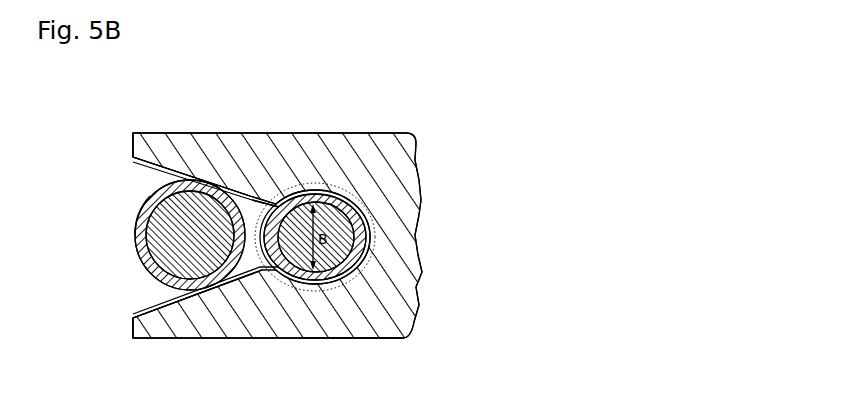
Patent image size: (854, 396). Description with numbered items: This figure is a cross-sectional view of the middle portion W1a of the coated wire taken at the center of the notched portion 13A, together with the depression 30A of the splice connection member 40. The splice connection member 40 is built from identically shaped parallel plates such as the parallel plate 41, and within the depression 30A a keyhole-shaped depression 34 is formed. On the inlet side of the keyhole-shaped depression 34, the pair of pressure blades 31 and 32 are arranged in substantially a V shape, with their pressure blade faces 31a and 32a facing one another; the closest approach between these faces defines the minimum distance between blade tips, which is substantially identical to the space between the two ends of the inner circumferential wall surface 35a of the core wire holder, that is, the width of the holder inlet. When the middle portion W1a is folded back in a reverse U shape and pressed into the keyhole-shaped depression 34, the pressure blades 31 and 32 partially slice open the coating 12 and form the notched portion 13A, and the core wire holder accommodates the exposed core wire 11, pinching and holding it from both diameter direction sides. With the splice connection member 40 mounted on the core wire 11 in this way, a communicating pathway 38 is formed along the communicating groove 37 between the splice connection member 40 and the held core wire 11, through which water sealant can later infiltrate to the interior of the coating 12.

The splice connection member 40 is at (428, 152).
The parallel plate 41 is at (380, 133).
The depression 30A is at (153, 123).
The pressure blade 32 is at (207, 145).
The pressure blade 31 is at (200, 327).
The pressure blade face 32a is at (133, 160).
The pressure blade face 31a is at (133, 315).
The notched portion 13A is at (262, 193).
The inner circumferential wall surface 35a is at (392, 300).
The communicating groove 37 is at (320, 182).
The communicating pathway 38 is at (378, 268).
The middle portion W1a is at (133, 237).
The keyhole-shaped depression 34 is at (133, 187).
The coating 12 is at (140, 263).
The core wire 11 is at (148, 222).